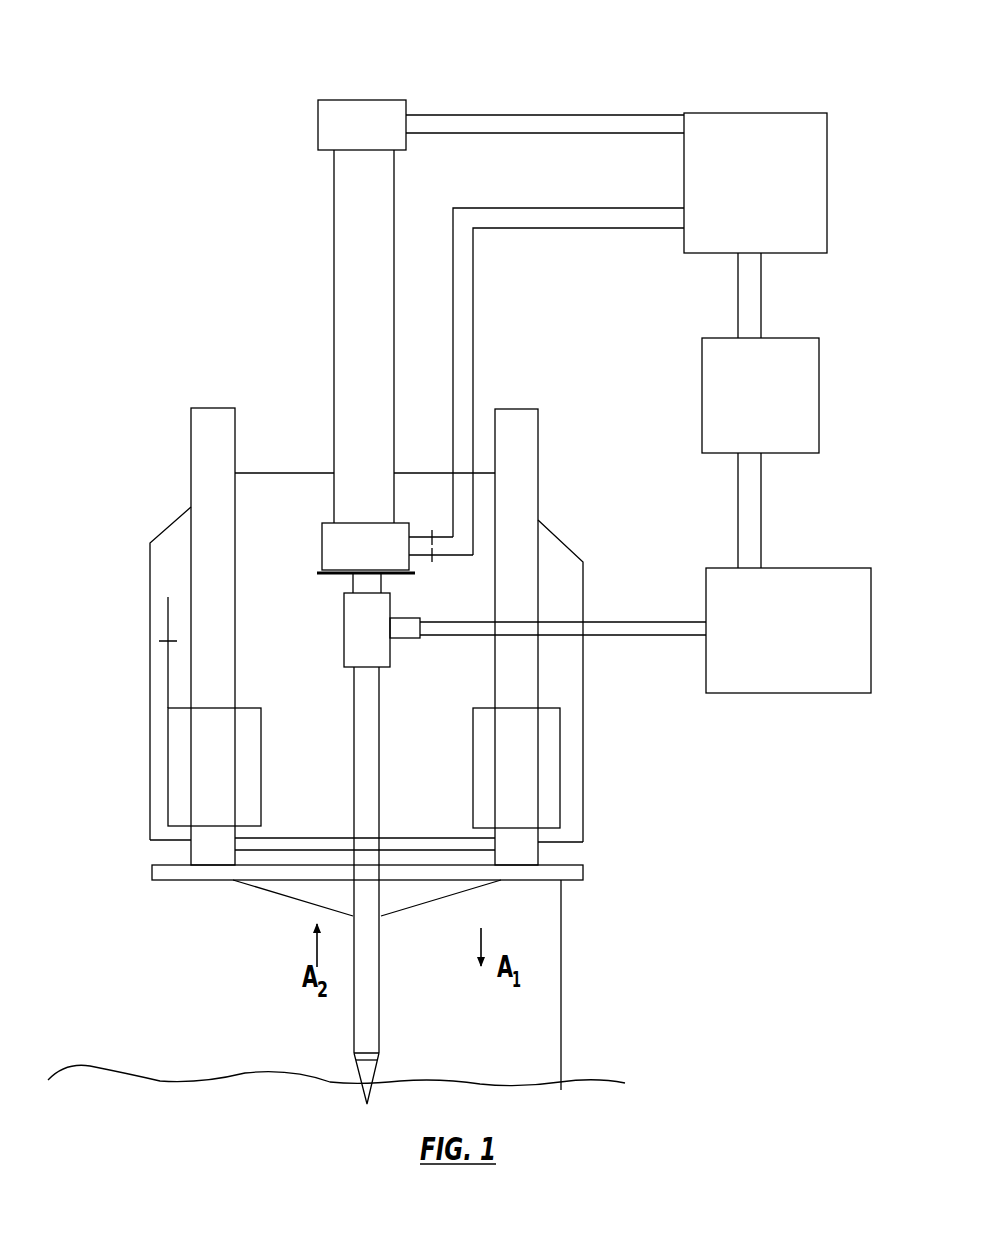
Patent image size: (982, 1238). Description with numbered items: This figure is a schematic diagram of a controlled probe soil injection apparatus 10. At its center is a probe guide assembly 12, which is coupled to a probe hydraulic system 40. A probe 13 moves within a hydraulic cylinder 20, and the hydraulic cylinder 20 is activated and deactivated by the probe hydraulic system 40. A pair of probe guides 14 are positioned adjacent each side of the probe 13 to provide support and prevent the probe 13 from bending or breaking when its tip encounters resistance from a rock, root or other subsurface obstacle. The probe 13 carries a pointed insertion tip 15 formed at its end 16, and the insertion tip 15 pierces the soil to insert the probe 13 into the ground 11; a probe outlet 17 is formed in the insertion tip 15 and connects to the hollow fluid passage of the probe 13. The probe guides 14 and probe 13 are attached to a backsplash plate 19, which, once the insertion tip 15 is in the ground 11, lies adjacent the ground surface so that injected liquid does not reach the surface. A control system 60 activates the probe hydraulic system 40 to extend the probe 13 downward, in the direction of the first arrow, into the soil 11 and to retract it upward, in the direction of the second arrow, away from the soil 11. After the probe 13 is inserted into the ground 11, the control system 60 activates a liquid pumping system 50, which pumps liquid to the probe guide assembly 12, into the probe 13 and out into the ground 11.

The controlled probe soil injection apparatus 10 is at (204, 58).
The ground 11 is at (631, 1110).
The probe guide assembly 12 is at (163, 435).
The probe 13 is at (382, 968).
The probe guides 14 is at (196, 407).
The insertion tip 15 is at (372, 1073).
The end of probe 16 is at (380, 1044).
The probe outlet 17 is at (362, 1065).
The backsplash plate 19 is at (575, 881).
The hydraulic cylinder 20 is at (394, 193).
The probe hydraulic system 40 is at (736, 112).
The liquid pumping system 50 is at (767, 694).
The control system 60 is at (793, 337).